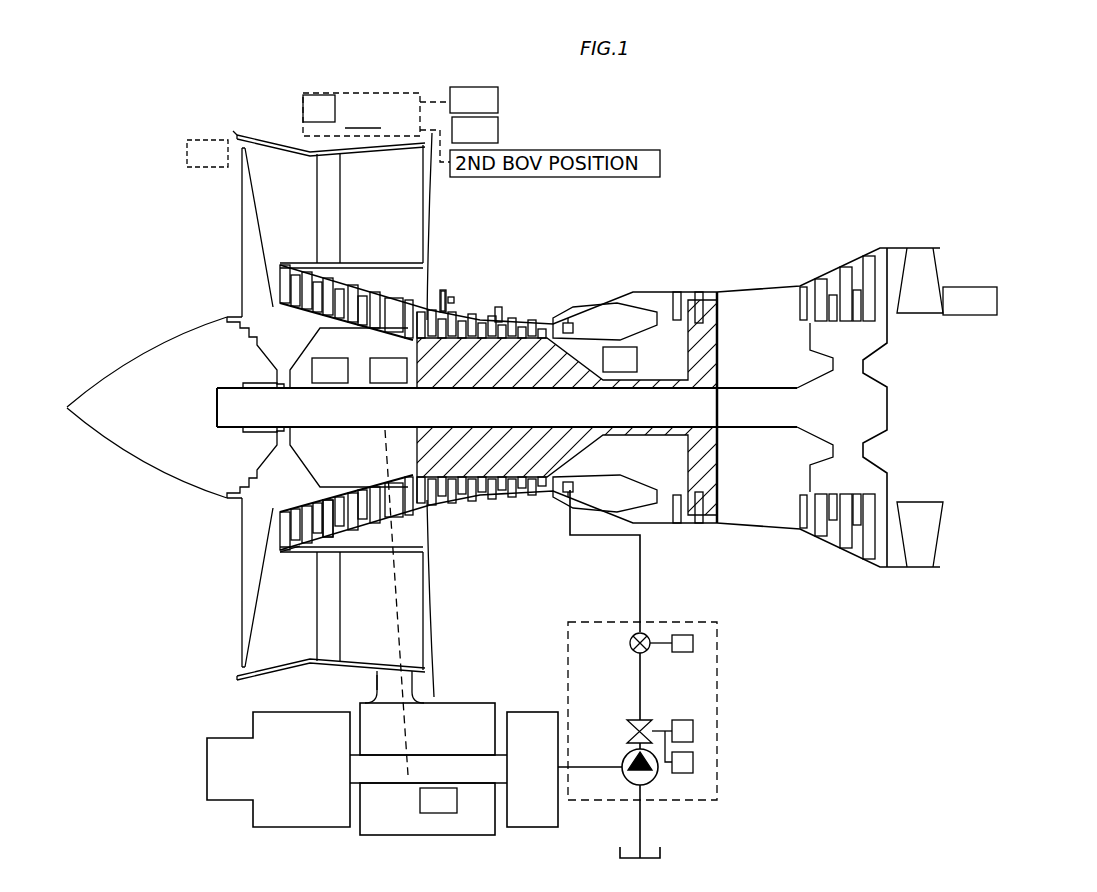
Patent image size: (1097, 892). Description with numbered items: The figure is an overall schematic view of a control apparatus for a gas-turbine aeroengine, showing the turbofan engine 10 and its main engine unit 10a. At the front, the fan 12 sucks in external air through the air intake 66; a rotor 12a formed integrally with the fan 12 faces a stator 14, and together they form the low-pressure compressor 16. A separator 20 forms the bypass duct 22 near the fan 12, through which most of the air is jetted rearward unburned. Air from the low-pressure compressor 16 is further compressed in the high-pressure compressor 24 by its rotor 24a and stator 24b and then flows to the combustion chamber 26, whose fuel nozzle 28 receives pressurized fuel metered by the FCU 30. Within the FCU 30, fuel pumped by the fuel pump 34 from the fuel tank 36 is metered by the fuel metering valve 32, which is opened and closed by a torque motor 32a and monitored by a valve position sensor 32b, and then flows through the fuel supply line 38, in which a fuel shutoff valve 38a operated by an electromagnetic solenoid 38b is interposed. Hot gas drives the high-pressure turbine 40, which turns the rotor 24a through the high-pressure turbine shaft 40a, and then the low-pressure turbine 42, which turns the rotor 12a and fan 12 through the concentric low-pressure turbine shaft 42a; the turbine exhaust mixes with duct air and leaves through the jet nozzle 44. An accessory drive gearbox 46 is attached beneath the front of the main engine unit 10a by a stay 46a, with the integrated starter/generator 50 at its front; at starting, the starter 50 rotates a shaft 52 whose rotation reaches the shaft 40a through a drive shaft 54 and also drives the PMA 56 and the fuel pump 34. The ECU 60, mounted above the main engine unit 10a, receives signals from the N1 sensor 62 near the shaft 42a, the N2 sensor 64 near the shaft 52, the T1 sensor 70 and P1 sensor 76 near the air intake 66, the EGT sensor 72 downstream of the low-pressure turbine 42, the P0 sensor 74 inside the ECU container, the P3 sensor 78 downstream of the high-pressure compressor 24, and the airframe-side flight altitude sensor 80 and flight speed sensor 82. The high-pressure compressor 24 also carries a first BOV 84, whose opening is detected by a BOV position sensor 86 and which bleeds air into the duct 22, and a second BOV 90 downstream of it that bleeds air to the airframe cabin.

The turbofan engine 10 is at (543, 237).
The main engine unit 10a is at (451, 580).
The fan 12 is at (234, 569).
The rotor 12a is at (325, 500).
The stator 14 is at (283, 553).
The low-pressure compressor 16 is at (341, 338).
The separator 20 is at (440, 290).
The duct 22 is at (402, 215).
The high-pressure compressor 24 is at (520, 497).
The rotor 24a is at (517, 373).
The stator 24b is at (470, 497).
The combustion chamber 26 is at (590, 312).
The fuel nozzle 28 is at (565, 322).
The FCU (fuel control unit) 30 is at (567, 666).
The fuel metering valve 32 is at (654, 716).
The torque motor 32a is at (693, 720).
The valve position sensor 32b is at (687, 773).
The fuel pump 34 is at (622, 758).
The fuel tank 36 is at (618, 855).
The fuel supply line 38 is at (637, 668).
The fuel shutoff valve 38a is at (628, 644).
The electromagnetic solenoid 38b is at (683, 652).
The high-pressure turbine 40 is at (718, 342).
The high-pressure turbine shaft 40a is at (387, 432).
The low-pressure turbine 42 is at (815, 345).
The low-pressure turbine shaft 42a is at (523, 418).
The jet nozzle 44 is at (946, 402).
The accessory drive gearbox 46 is at (450, 700).
The stay 46a is at (377, 682).
The integrated starter/generator 50 is at (307, 781).
The shaft 52 is at (385, 785).
The drive shaft 54 is at (407, 730).
The PMA (permanent magnet alternator) 56 is at (548, 781).
The ECU (Electronic Control Unit) 60 is at (363, 93).
The N1 sensor 62 is at (312, 365).
The N2 sensor 64 is at (457, 802).
The air intake 66 is at (233, 135).
The T1 sensor 70 is at (205, 138).
The EGT sensor 72 is at (997, 295).
The P0 sensor 74 is at (303, 108).
The P1 sensor 76 is at (392, 343).
The P3 sensor 78 is at (638, 360).
The flight altitude sensor 80 is at (500, 95).
The flight speed sensor 82 is at (498, 128).
The first BOV (Bleed Off Valve) 84 is at (447, 290).
The BOV position sensor 86 is at (465, 288).
The second BOV (Bleed Off Valve) 90 is at (497, 307).